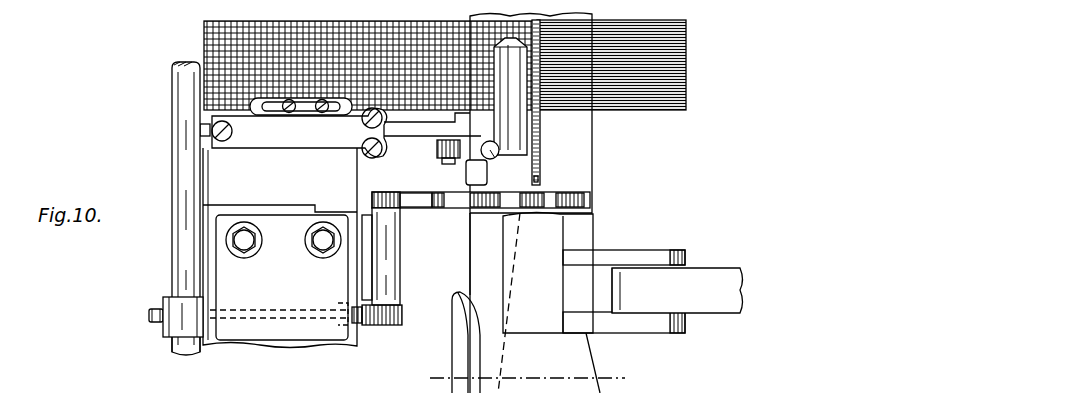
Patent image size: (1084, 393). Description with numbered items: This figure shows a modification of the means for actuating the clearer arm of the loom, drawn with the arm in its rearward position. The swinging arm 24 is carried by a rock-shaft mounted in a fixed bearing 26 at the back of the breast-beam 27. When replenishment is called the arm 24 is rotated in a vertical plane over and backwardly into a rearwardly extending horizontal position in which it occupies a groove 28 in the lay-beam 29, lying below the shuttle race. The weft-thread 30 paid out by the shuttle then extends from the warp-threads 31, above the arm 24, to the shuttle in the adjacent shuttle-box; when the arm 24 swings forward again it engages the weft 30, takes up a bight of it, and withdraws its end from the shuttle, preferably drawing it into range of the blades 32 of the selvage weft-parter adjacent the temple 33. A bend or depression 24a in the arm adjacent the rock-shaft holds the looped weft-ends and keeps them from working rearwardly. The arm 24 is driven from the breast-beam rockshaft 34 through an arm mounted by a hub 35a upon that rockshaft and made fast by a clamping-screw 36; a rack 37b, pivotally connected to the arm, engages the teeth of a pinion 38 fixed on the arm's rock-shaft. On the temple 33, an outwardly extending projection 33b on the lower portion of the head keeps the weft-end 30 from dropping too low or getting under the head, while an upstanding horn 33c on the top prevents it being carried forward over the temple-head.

The swinging arm 24 is at (453, 212).
The bend or depression 24a is at (416, 200).
The fixed bearing 26 is at (400, 275).
The breast-beam 27 is at (218, 180).
The groove 28 is at (592, 212).
The lay-beam 29 is at (592, 147).
The weft-thread 30 is at (527, 390).
The warp-threads 31 is at (686, 110).
The blades of the selvage weft-parter 32 is at (530, 126).
The temple 33 is at (408, 140).
The outwardly extending projection 33b is at (512, 176).
The upstanding horn 33c is at (527, 152).
The breast-beam rockshaft 34 is at (174, 121).
The hub 35a is at (166, 335).
The clamping-screw 36 is at (149, 317).
The rack 37b is at (365, 328).
The pinion 38 is at (404, 316).